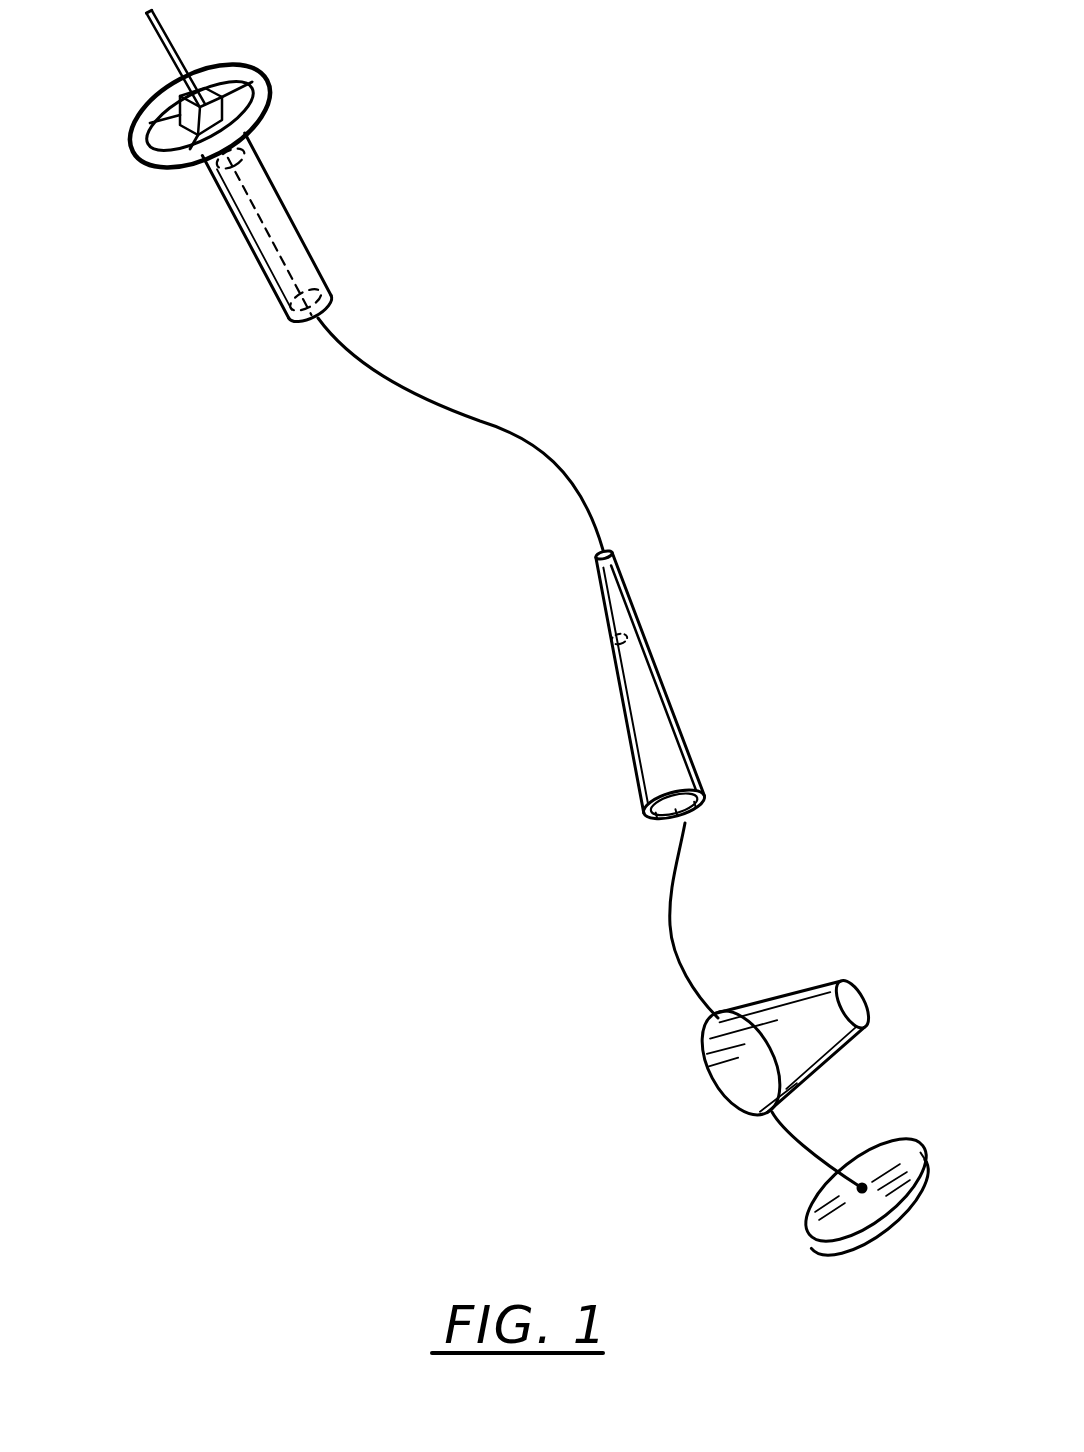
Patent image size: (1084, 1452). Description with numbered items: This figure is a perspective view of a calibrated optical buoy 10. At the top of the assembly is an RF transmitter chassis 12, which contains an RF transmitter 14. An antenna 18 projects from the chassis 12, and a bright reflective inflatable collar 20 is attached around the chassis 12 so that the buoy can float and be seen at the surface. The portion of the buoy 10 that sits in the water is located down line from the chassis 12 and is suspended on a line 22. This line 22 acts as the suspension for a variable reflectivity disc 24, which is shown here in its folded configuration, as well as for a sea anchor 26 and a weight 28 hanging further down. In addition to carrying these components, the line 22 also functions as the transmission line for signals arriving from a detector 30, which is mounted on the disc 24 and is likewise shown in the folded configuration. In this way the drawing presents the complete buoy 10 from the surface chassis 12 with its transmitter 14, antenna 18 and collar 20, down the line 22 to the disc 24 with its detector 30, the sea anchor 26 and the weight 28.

The calibrated optical buoy 10 is at (677, 513).
The RF transmitter chassis 12 is at (297, 228).
The RF transmitter 14 is at (273, 181).
The antenna 18 is at (166, 52).
The bright reflective inflatable collar 20 is at (223, 67).
The line 22 is at (480, 418).
The variable reflectivity disc 24 is at (655, 618).
The sea anchor 26 is at (788, 992).
The weight 28 is at (855, 1156).
The detector 30 is at (610, 630).